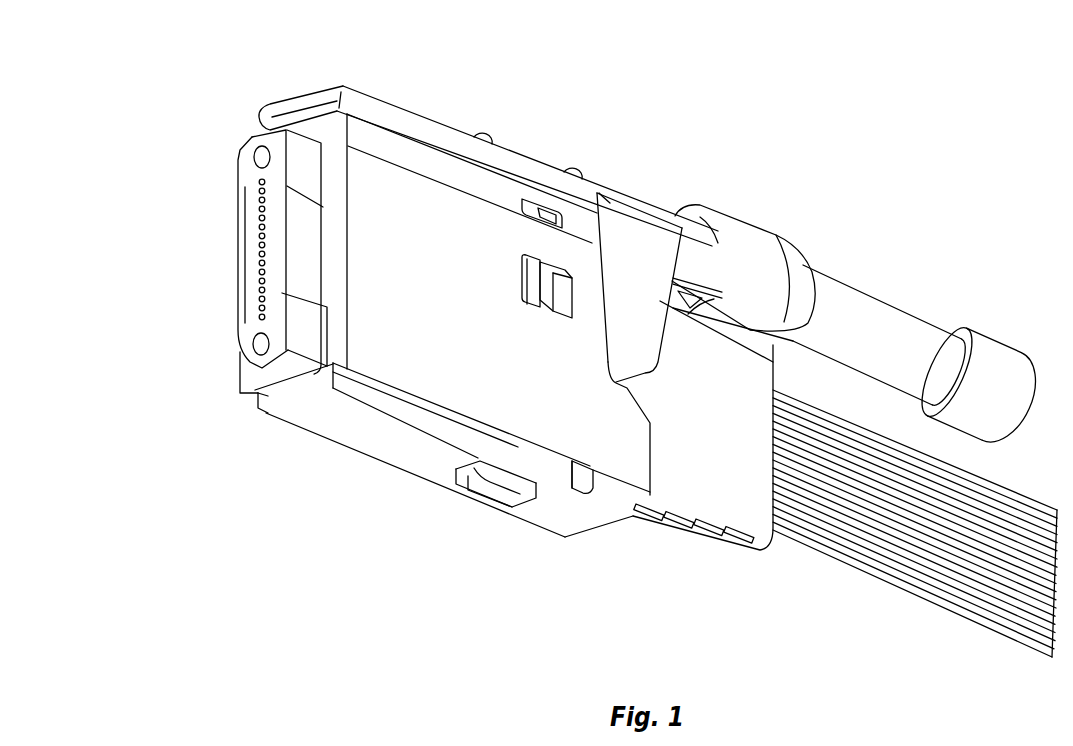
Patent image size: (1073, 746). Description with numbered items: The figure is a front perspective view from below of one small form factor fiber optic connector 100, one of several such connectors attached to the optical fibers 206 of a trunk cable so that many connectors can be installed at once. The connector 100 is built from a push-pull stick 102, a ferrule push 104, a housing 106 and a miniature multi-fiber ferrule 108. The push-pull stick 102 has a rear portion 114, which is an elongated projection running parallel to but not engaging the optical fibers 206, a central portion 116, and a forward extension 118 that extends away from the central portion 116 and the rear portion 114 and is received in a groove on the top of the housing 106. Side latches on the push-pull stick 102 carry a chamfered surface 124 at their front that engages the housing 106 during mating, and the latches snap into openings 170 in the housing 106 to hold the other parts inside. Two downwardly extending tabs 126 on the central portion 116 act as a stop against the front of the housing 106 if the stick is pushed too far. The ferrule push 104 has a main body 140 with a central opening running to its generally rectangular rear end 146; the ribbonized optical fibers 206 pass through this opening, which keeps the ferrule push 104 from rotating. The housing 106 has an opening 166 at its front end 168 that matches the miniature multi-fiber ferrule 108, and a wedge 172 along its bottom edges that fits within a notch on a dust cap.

The small form factor fiber optic connector 100 is at (618, 354).
The push-pull stick 102 is at (743, 232).
The ferrule push 104 is at (694, 551).
The housing 106 is at (449, 450).
The miniature multi-fiber ferrule 108 is at (254, 252).
The rear portion 114 is at (921, 341).
The central portion 116 is at (639, 163).
The forward extension 118 is at (488, 194).
The chamfered surface 124 is at (526, 314).
The downwardly extending tabs 126 is at (639, 344).
The main body 140 is at (703, 425).
The rear end 146 is at (761, 336).
The opening 166 is at (256, 374).
The front end 168 is at (277, 434).
The openings 170 is at (556, 324).
The wedge 172 is at (553, 529).
The optical fibers 206 is at (915, 539).